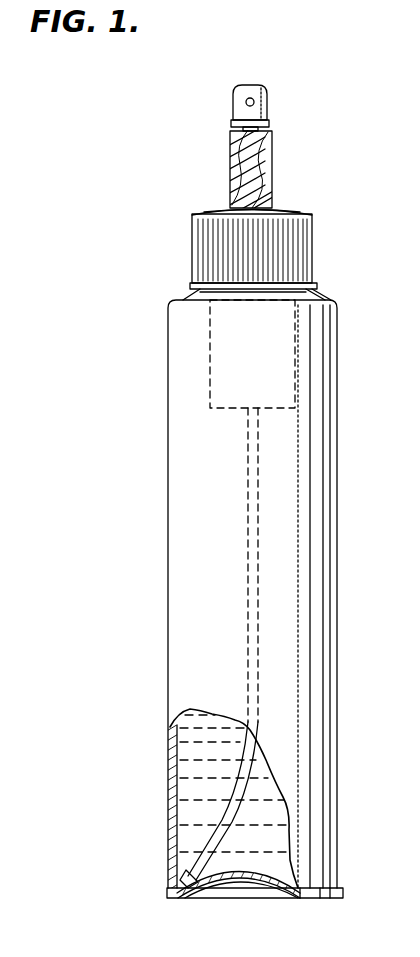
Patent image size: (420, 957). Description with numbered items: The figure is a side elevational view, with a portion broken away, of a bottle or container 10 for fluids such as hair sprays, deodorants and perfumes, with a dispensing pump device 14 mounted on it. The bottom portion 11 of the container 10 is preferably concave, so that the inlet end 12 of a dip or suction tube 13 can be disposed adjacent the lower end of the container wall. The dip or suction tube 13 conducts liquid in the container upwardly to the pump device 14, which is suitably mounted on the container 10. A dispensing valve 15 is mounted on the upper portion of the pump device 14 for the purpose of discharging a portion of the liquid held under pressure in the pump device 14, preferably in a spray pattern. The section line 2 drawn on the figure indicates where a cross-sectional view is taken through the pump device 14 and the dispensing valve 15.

The section line 2- 2 is at (250, 72).
The bottle or container 10 is at (167, 583).
The bottom portion 11 is at (245, 866).
The inlet end 12 is at (183, 873).
The dip or suction tube 13 is at (237, 775).
The pump device 14 is at (209, 340).
The dispensing valve 15 is at (270, 105).